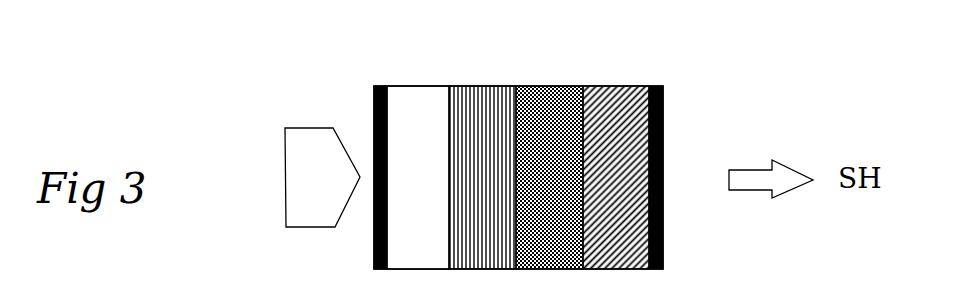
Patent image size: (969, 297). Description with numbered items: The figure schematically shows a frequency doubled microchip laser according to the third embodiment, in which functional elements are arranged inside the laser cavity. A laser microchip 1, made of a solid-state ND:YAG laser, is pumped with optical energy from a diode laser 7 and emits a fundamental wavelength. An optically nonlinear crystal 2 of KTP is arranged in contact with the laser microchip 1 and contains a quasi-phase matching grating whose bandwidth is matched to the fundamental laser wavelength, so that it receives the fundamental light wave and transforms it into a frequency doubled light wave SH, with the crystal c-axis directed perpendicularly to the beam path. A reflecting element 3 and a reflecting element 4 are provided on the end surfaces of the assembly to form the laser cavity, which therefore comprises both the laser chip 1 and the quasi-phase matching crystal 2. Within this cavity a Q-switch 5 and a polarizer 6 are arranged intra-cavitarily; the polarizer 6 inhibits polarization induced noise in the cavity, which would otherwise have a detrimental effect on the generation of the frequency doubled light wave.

The laser microchip 1 is at (428, 100).
The optically nonlinear crystal 2 is at (488, 100).
The reflecting element 3 is at (370, 110).
The reflecting element 4 is at (660, 108).
The Q-switch 5 is at (552, 108).
The polarizer 6 is at (615, 108).
The diode laser 7 is at (308, 145).